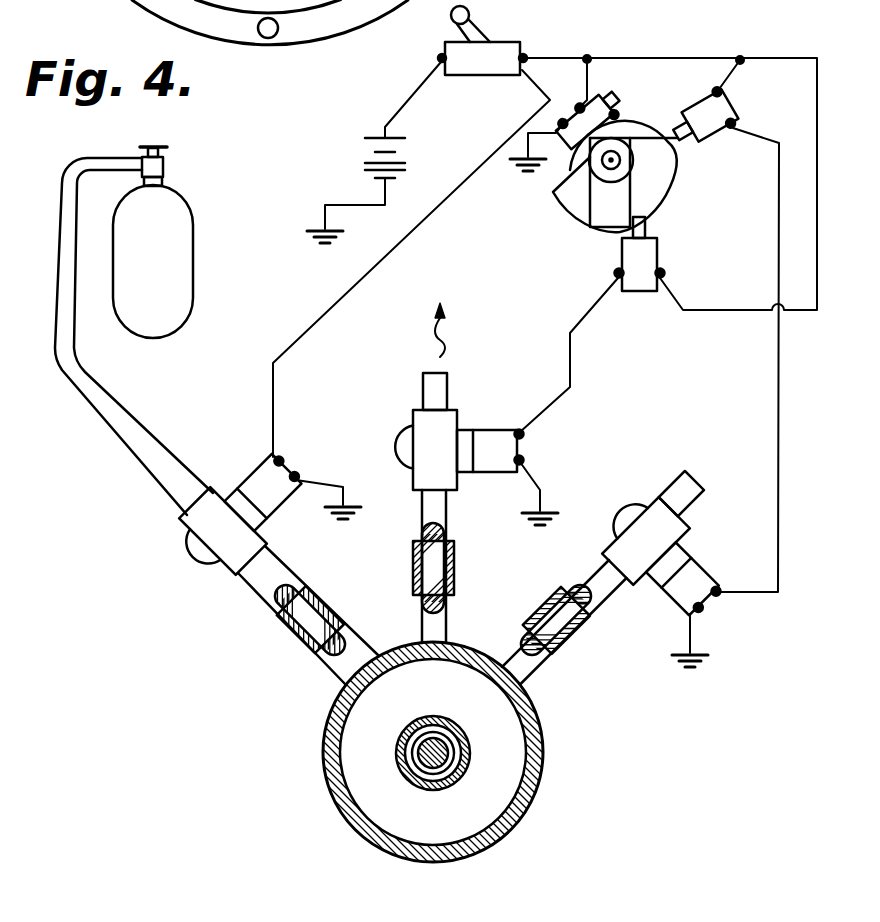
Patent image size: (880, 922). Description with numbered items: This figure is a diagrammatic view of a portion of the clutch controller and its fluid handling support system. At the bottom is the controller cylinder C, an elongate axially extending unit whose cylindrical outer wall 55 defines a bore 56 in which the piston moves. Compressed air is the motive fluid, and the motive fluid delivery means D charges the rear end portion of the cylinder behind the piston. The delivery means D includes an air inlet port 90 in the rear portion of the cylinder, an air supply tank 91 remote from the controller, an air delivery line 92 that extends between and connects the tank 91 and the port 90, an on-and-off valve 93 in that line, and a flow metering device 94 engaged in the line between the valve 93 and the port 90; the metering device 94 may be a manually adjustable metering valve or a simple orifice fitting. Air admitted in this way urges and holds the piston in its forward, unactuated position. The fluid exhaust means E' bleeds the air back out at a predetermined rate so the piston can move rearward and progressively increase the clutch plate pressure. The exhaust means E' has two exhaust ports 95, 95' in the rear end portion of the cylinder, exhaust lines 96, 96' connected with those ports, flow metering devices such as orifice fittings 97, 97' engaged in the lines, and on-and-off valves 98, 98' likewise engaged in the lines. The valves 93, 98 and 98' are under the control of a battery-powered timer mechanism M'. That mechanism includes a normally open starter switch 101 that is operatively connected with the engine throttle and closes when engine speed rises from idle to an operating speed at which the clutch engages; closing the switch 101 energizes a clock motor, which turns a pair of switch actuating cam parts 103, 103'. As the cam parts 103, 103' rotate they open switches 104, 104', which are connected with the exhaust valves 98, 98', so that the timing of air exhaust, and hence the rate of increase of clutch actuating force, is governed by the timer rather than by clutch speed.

The outer wall 55 is at (523, 817).
The bore 56 is at (508, 778).
The air inlet port 90 is at (370, 677).
The air supply tank 91 is at (193, 250).
The air delivery line 92 is at (170, 474).
The on-and-off valve 93 is at (207, 547).
The flow metering device 94 is at (293, 633).
The exhaust port 95 is at (441, 598).
The exhaust port 95' is at (497, 719).
The exhaust line 96 is at (410, 356).
The exhaust line 96' is at (706, 471).
The flow metering device 97 is at (465, 569).
The flow metering device 97' is at (555, 621).
The on-and-off valve 98 is at (450, 467).
The on-and-off valve 98' is at (660, 568).
The starter switch 101 is at (505, 50).
The switch actuating cam part 103 is at (568, 182).
The switch actuating cam part 103' is at (654, 176).
The switch 104 is at (601, 324).
The switch 104' is at (722, 338).
The motive fluid delivery means D is at (107, 427).
The timer mechanism M' is at (667, 92).
The fluid exhaust means E' is at (491, 393).
The cylinder C is at (543, 733).